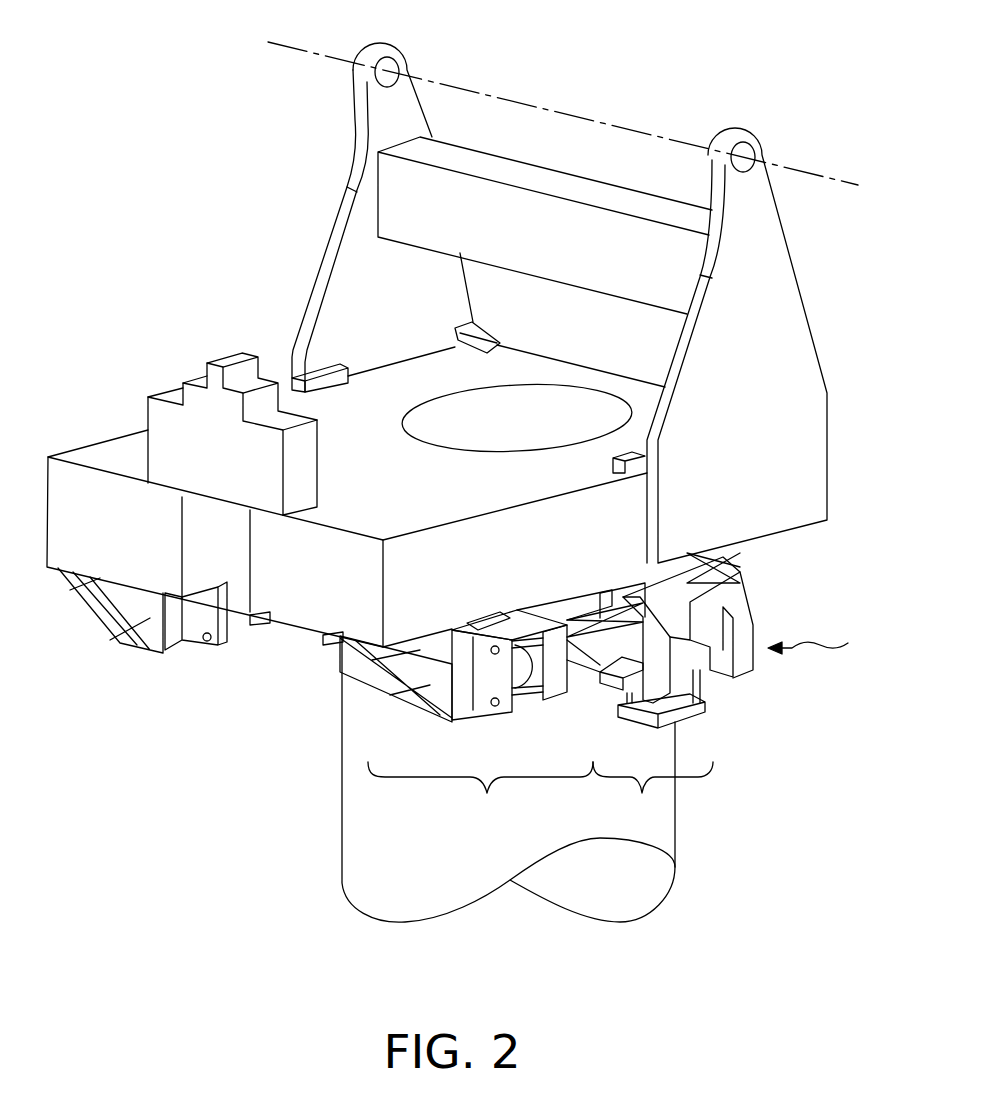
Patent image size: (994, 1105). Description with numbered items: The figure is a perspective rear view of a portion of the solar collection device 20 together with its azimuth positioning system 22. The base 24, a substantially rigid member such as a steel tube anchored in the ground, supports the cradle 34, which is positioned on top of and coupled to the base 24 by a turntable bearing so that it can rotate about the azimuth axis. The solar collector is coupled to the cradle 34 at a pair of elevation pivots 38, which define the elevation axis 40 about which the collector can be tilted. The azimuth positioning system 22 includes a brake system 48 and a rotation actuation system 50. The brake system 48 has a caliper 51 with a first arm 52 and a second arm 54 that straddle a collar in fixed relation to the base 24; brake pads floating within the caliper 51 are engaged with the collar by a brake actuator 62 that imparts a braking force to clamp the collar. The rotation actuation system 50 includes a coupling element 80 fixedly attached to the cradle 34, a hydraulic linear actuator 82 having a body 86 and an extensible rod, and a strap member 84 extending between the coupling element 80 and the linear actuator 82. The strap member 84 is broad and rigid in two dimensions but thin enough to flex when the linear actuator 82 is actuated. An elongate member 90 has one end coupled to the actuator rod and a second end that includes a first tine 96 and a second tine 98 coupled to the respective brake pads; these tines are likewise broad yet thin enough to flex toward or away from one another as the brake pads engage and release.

The solar collection device 20 is at (160, 823).
The azimuth positioning system 22 is at (828, 638).
The base 24 is at (347, 843).
The cradle 34 is at (102, 452).
The elevation pivots 38 is at (397, 64).
The elevation axis 40 is at (845, 185).
The brake system 48 is at (701, 682).
The rotation actuation system 50 is at (505, 679).
The caliper 51 is at (750, 606).
The first arm 52 is at (620, 603).
The second arm 54 is at (717, 678).
The brake actuator 62 is at (637, 717).
The coupling element 80 is at (370, 670).
The linear actuator 82 is at (523, 685).
The strap member 84 is at (460, 712).
The body 86 is at (510, 633).
The elongate member 90 is at (562, 617).
The first tine 96 is at (600, 623).
The second tine 98 is at (582, 655).